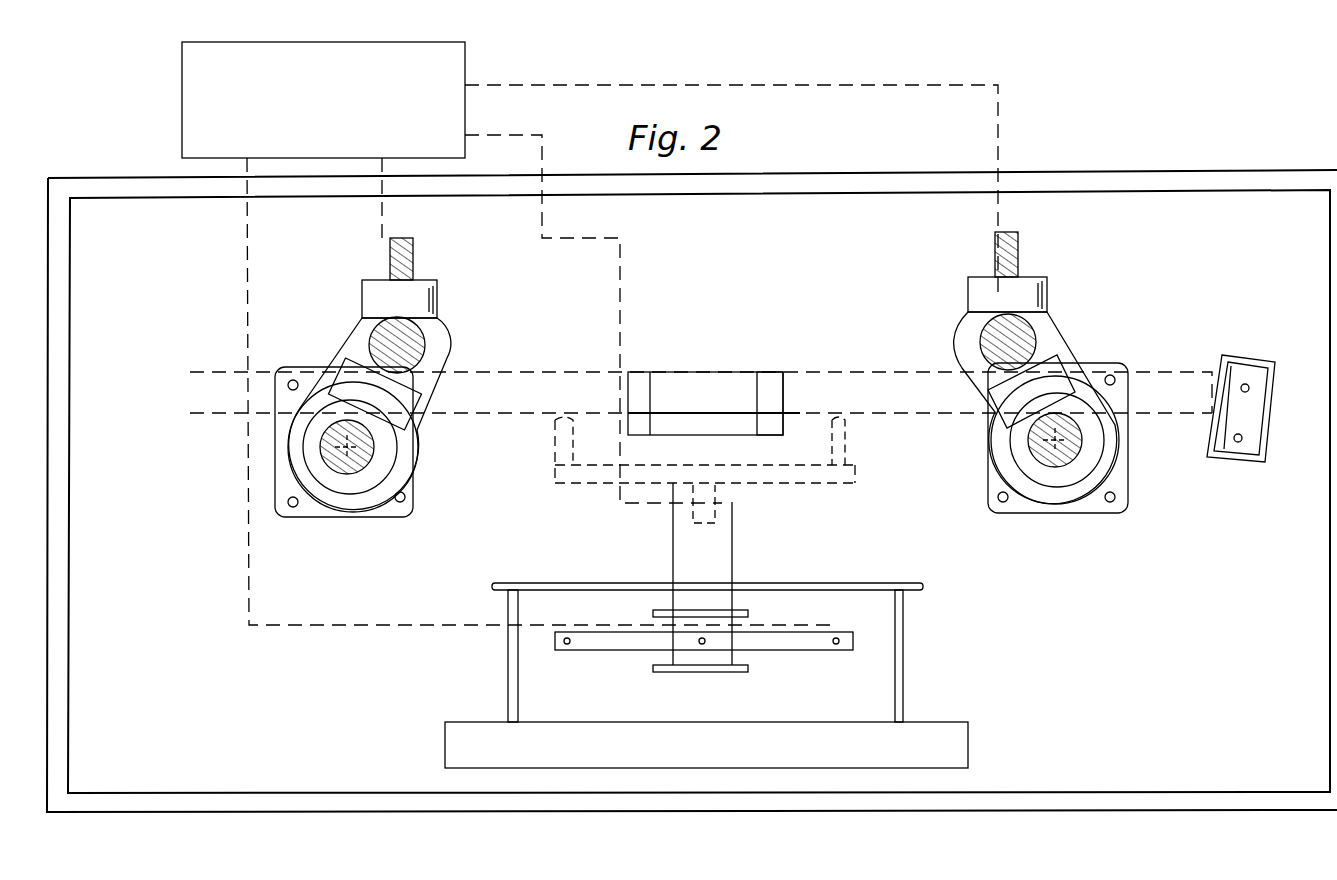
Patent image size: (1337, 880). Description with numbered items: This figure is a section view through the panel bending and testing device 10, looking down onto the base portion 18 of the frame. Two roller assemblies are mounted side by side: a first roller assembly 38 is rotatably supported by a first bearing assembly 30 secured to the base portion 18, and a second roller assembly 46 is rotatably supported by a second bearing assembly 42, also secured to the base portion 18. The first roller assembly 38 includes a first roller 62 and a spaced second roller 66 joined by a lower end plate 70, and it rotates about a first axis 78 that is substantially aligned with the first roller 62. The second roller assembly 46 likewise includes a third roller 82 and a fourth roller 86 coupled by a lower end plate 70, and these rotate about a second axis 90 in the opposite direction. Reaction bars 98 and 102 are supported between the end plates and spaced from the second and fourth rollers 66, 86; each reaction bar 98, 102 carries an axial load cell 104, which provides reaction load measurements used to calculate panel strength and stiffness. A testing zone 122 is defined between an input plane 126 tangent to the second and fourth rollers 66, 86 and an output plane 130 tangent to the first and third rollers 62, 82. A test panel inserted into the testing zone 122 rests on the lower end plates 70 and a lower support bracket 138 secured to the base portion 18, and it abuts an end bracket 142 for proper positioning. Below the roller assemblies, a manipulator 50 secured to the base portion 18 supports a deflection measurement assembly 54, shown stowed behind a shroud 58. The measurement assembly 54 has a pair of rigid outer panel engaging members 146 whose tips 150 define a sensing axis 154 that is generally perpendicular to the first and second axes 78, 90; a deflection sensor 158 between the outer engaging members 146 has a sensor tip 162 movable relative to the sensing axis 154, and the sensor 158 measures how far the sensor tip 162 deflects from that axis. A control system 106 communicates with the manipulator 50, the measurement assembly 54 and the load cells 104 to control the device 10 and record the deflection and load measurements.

The panel bending and testing device 10 is at (1130, 100).
The base portion 18 is at (1240, 207).
The control system 106 is at (352, 116).
The second roller assembly 46 is at (318, 332).
The first roller assembly 38 is at (1100, 338).
The axial load cell 104 is at (377, 300).
The reaction bar 102 is at (406, 262).
The reaction bar 98 is at (1012, 256).
The fourth roller 86 is at (420, 350).
The second roller 66 is at (1022, 335).
The lower end plate 70 is at (376, 450).
The second axis 90 is at (350, 453).
The third roller 82 is at (320, 447).
The second bearing assembly 42 is at (320, 512).
The first roller 62 is at (1078, 437).
The first axis 78 is at (1048, 452).
The first bearing assembly 30 is at (1080, 505).
The testing zone 122 is at (552, 386).
The lower support bracket 138 is at (773, 410).
The input plane 126 is at (808, 370).
The output plane 130 is at (900, 413).
The sensing axis 154 is at (680, 404).
The sensor tip 162 is at (700, 420).
The deflection sensor 158 is at (718, 485).
The tips 150 is at (560, 432).
The outer panel engaging members 146 is at (560, 466).
The manipulator 50 is at (718, 600).
The deflection measurement assembly 54 is at (583, 497).
The shroud 58 is at (848, 587).
The end bracket 142 is at (1252, 450).